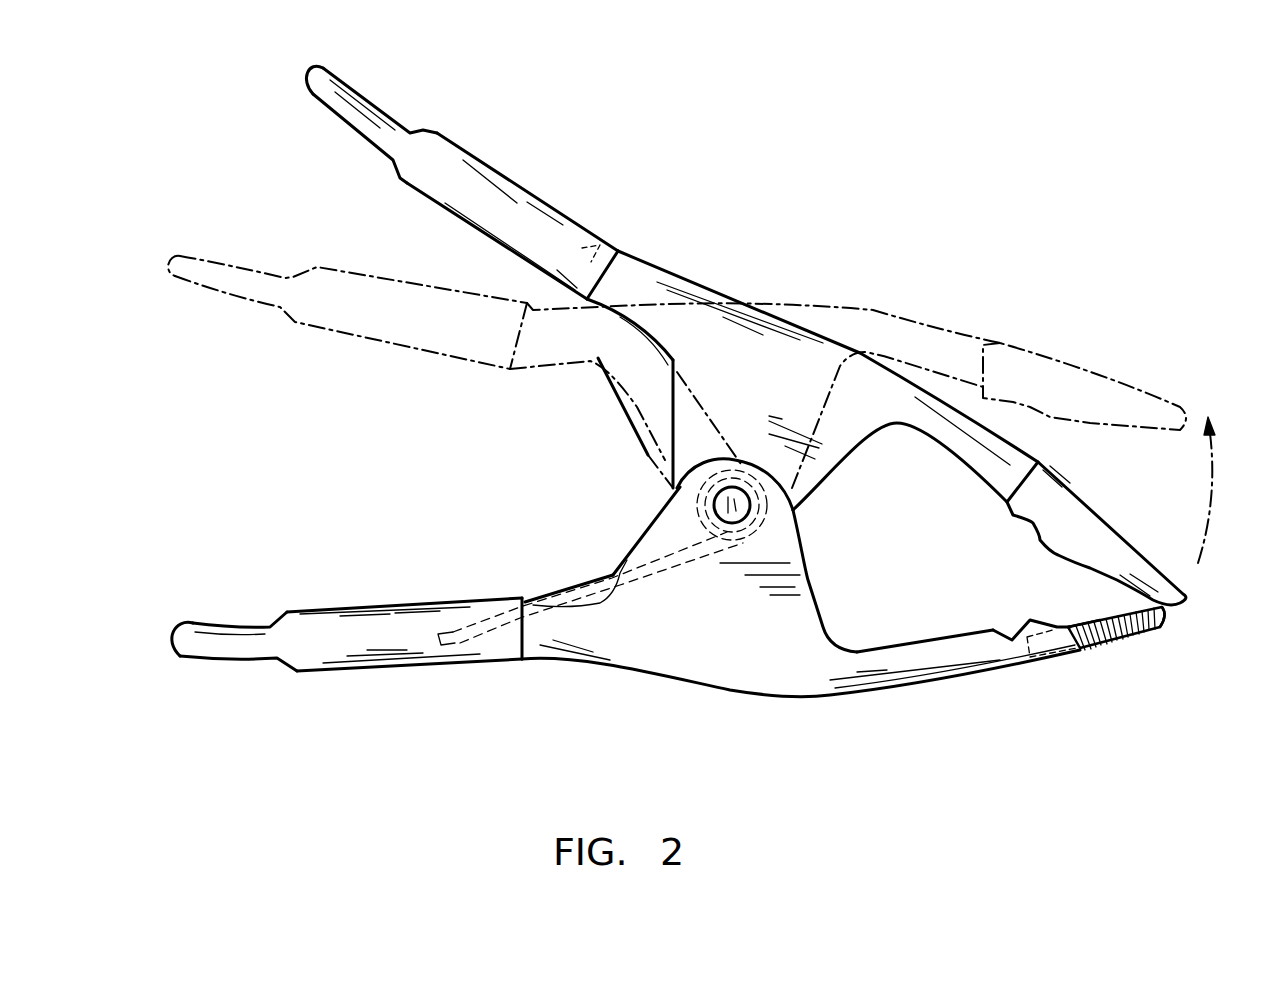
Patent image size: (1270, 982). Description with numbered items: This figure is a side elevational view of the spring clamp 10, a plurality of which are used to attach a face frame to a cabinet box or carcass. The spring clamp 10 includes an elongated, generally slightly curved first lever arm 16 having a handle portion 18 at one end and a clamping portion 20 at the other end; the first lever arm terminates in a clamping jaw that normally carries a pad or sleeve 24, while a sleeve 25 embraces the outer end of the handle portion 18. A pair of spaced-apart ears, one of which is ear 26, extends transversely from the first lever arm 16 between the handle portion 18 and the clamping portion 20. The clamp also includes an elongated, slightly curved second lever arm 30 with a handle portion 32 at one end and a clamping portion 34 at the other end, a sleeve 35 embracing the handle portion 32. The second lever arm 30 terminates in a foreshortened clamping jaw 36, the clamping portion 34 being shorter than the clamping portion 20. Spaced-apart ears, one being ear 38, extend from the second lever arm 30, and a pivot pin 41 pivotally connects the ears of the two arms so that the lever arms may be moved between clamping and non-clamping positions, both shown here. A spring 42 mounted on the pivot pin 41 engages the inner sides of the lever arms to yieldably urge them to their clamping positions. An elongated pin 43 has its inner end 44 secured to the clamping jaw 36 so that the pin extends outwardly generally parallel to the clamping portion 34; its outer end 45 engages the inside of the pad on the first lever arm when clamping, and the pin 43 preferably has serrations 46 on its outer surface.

The spring clamp 10 is at (770, 265).
The first lever arm 16 is at (832, 330).
The handle portion 18 is at (627, 273).
The clamping portion 20 is at (987, 462).
The pad or sleeve 24 is at (1065, 528).
The sleeve 25 is at (415, 177).
The ear 26 is at (713, 373).
The second lever arm 30 is at (805, 703).
The handle portion 32 is at (537, 642).
The clamping portion 34 is at (940, 660).
The sleeve 35 is at (360, 620).
The clamping jaw 36 is at (1077, 653).
The ear 38 is at (720, 617).
The pivot pin 41 is at (717, 495).
The spring 42 is at (587, 585).
The pin 43 is at (1118, 648).
The inner end 44 is at (1027, 653).
The outer end 45 is at (1165, 620).
The serrations 46 is at (1087, 615).